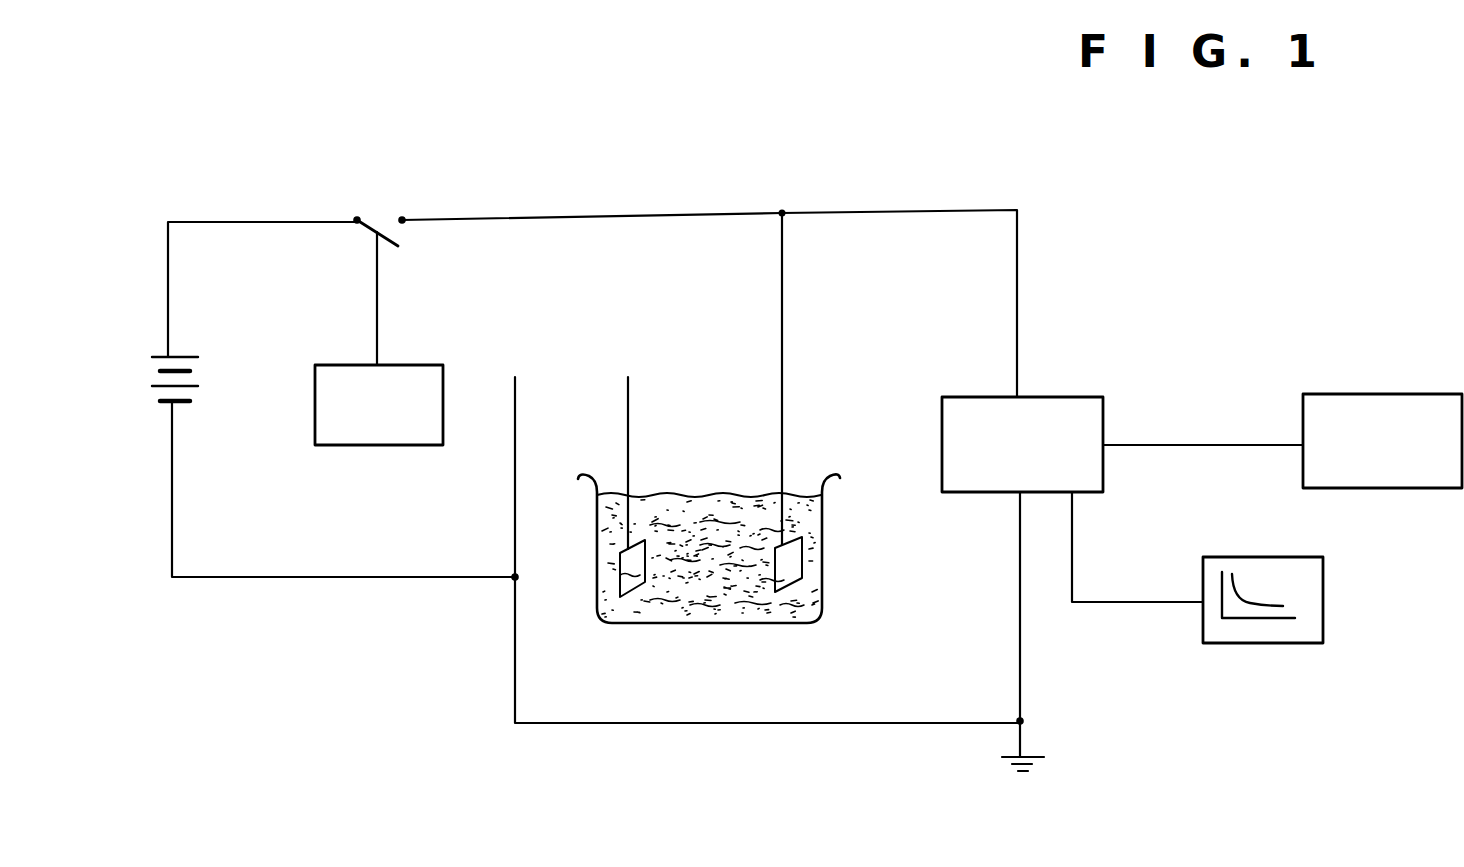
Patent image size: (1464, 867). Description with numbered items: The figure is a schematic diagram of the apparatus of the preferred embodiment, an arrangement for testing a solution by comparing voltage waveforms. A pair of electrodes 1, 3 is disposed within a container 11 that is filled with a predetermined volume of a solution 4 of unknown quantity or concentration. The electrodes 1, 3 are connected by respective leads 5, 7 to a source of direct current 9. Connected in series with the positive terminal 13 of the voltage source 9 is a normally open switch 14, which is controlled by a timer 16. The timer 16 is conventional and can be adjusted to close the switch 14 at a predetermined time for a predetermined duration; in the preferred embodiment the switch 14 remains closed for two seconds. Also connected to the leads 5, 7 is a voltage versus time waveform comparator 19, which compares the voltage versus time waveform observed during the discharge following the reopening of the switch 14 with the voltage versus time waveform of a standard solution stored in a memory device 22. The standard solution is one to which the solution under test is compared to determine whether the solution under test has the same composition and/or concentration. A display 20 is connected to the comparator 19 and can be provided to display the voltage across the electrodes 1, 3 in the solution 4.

The electrode 1 is at (632, 579).
The electrode 3 is at (792, 579).
The solution 4 is at (708, 579).
The lead 5 is at (631, 433).
The lead 7 is at (785, 349).
The source of direct current 9 is at (160, 397).
The container 11 is at (828, 559).
The positive terminal 13 is at (168, 356).
The normally open switch 14 is at (391, 229).
The timer 16 is at (378, 446).
The voltage versus time waveform comparator 19 is at (1060, 397).
The display 20 is at (1383, 394).
The memory device 22 is at (1323, 604).